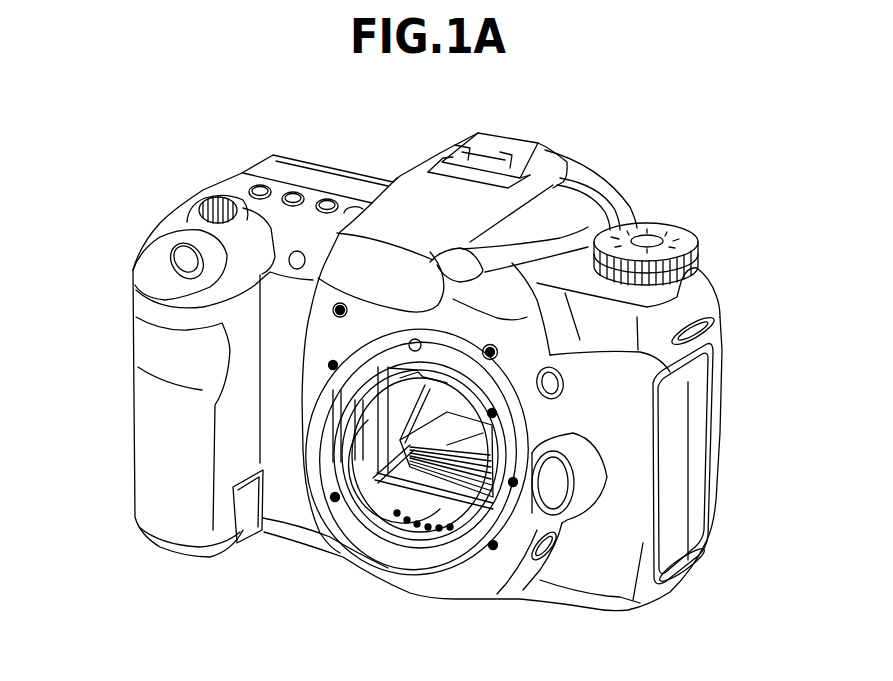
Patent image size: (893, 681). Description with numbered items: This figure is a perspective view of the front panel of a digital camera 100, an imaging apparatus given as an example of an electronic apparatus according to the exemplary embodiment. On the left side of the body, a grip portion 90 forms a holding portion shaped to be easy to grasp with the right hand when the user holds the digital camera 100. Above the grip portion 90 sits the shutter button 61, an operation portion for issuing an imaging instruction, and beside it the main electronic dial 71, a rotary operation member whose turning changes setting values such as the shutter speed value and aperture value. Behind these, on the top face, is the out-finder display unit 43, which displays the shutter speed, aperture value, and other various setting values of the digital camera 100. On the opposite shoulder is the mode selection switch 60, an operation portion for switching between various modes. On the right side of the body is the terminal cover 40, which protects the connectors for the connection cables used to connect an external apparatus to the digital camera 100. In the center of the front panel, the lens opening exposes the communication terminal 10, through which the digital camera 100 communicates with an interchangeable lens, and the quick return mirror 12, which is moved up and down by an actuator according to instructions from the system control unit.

The digital camera 100 is at (611, 142).
The communication terminal 10 is at (412, 518).
The quick return mirror 12 is at (457, 482).
The terminal cover 40 is at (677, 457).
The out-finder display unit 43 is at (277, 170).
The mode selection switch 60 is at (672, 247).
The shutter button 61 is at (180, 256).
The main electronic dial 71 is at (208, 198).
The grip portion 90 is at (150, 424).